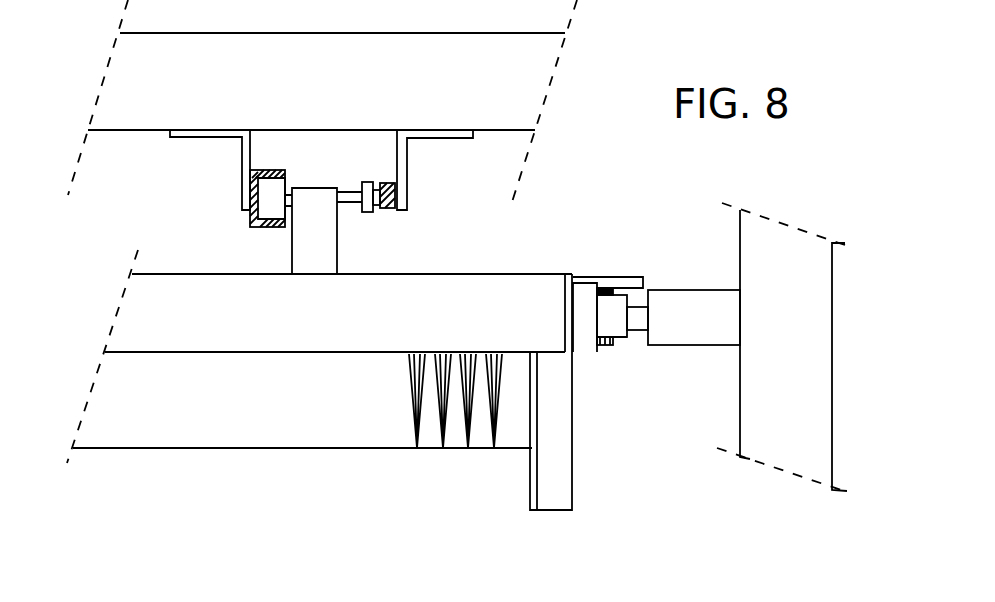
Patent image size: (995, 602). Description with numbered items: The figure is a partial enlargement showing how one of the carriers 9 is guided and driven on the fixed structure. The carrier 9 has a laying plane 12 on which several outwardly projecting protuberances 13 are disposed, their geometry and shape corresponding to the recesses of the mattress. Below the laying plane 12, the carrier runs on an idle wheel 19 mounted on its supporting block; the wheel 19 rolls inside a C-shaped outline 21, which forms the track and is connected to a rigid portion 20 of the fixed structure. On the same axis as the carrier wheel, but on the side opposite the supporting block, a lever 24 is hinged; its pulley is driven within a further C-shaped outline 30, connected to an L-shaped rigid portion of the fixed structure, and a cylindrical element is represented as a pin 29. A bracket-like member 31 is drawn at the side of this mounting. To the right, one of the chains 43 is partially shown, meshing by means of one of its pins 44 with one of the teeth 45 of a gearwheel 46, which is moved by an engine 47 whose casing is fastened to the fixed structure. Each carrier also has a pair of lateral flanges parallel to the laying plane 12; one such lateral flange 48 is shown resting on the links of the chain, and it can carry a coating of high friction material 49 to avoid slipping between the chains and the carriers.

The carrier 9 is at (175, 255).
The laying plane 12 is at (195, 353).
The protuberances 13 is at (443, 407).
The idle wheel 19 is at (277, 195).
The rigid portions 20 is at (250, 172).
The C-shaped outlines 21 is at (263, 228).
The lever 24 is at (370, 203).
The pin 29 is at (388, 203).
The C-shaped outlines 30 is at (385, 178).
The mounting bracket 31 is at (430, 147).
The chain 43 is at (613, 347).
The pin 44 is at (613, 285).
The tooth 45 is at (605, 347).
The gearwheel 46 is at (612, 322).
The engine 47 is at (713, 327).
The lateral flange 48 is at (587, 282).
The coating of high friction material 49 is at (592, 282).